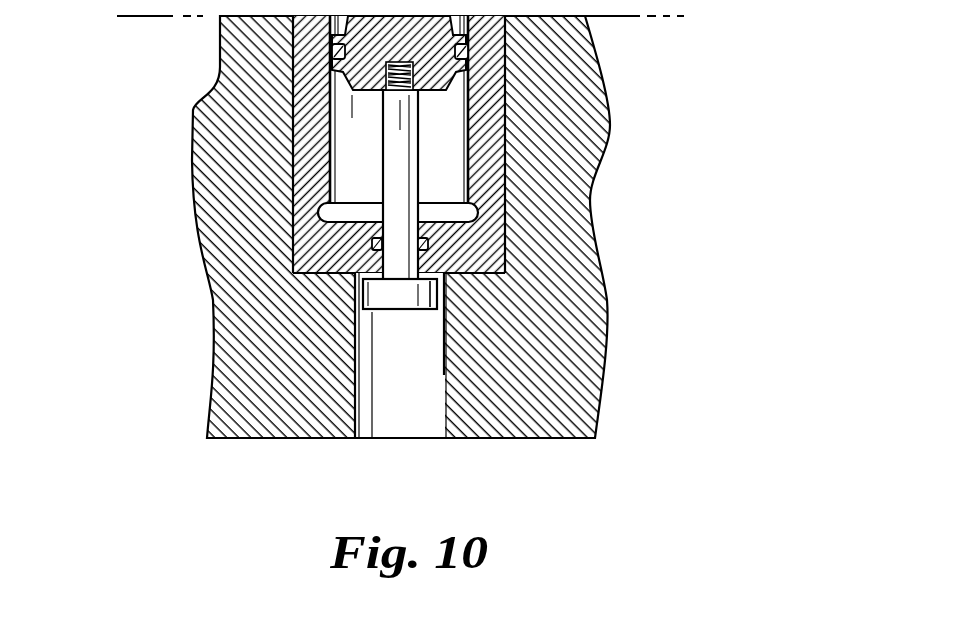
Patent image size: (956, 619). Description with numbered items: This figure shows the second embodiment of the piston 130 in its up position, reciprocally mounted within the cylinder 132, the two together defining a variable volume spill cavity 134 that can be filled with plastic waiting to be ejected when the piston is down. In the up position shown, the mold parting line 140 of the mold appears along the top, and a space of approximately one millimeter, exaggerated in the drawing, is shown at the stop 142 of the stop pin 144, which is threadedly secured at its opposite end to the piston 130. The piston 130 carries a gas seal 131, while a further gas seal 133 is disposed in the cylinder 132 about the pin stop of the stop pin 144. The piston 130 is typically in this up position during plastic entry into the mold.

The piston 130 is at (455, 38).
The gas seal 131 is at (330, 57).
The cylinder 132 is at (490, 265).
The gas seal 133 is at (372, 250).
The variable volume spill cavity 134 is at (447, 145).
The mold parting line 140 is at (150, 16).
The stop 142 is at (362, 303).
The stop pin 144 is at (383, 231).